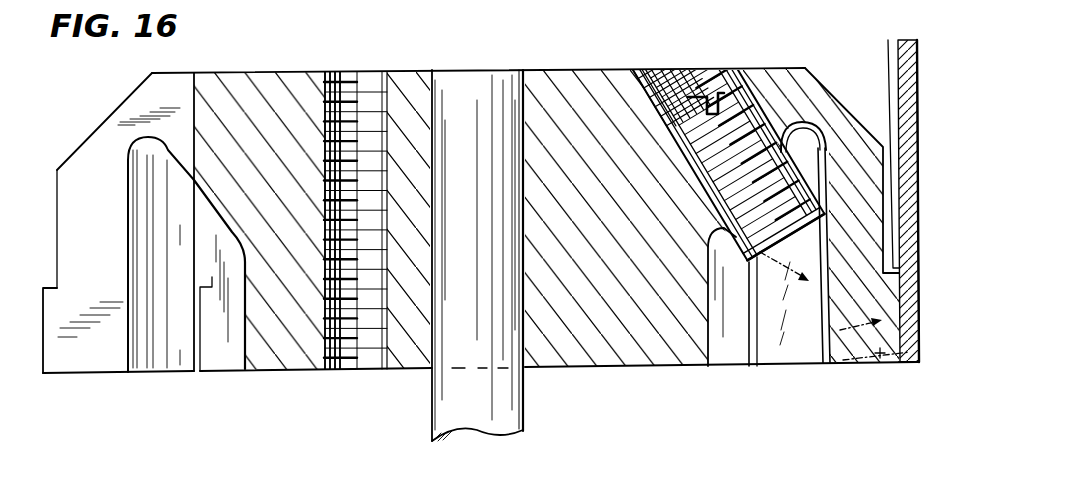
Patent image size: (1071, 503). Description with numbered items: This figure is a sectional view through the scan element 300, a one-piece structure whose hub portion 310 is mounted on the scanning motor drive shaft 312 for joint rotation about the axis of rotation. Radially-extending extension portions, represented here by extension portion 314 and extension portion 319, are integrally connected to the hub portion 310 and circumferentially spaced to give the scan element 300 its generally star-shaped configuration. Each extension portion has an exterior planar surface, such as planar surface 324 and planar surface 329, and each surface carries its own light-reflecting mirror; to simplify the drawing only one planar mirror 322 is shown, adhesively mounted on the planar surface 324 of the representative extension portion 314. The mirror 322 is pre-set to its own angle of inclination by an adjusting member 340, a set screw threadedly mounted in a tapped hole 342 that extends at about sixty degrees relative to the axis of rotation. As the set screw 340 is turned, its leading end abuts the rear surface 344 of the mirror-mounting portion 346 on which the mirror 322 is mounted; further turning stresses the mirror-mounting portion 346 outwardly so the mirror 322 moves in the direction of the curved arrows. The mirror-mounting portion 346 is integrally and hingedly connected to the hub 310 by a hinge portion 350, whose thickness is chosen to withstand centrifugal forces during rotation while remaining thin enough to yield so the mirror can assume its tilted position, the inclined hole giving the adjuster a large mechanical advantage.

The scan element 300 is at (755, 30).
The hub portion 310 is at (557, 70).
The scanning motor drive shaft 312 is at (523, 432).
The extension portion 314 is at (806, 68).
The extension portion 319 is at (100, 138).
The planar mirror 322 is at (915, 40).
The planar surface 324 is at (911, 355).
The planar surface 329 is at (43, 375).
The adjusting member 340 is at (714, 119).
The tapped hole 342 is at (695, 70).
The rear surface 344 is at (827, 343).
The mirror-mounting portion 346 is at (877, 363).
The hinge portion 350 is at (823, 124).